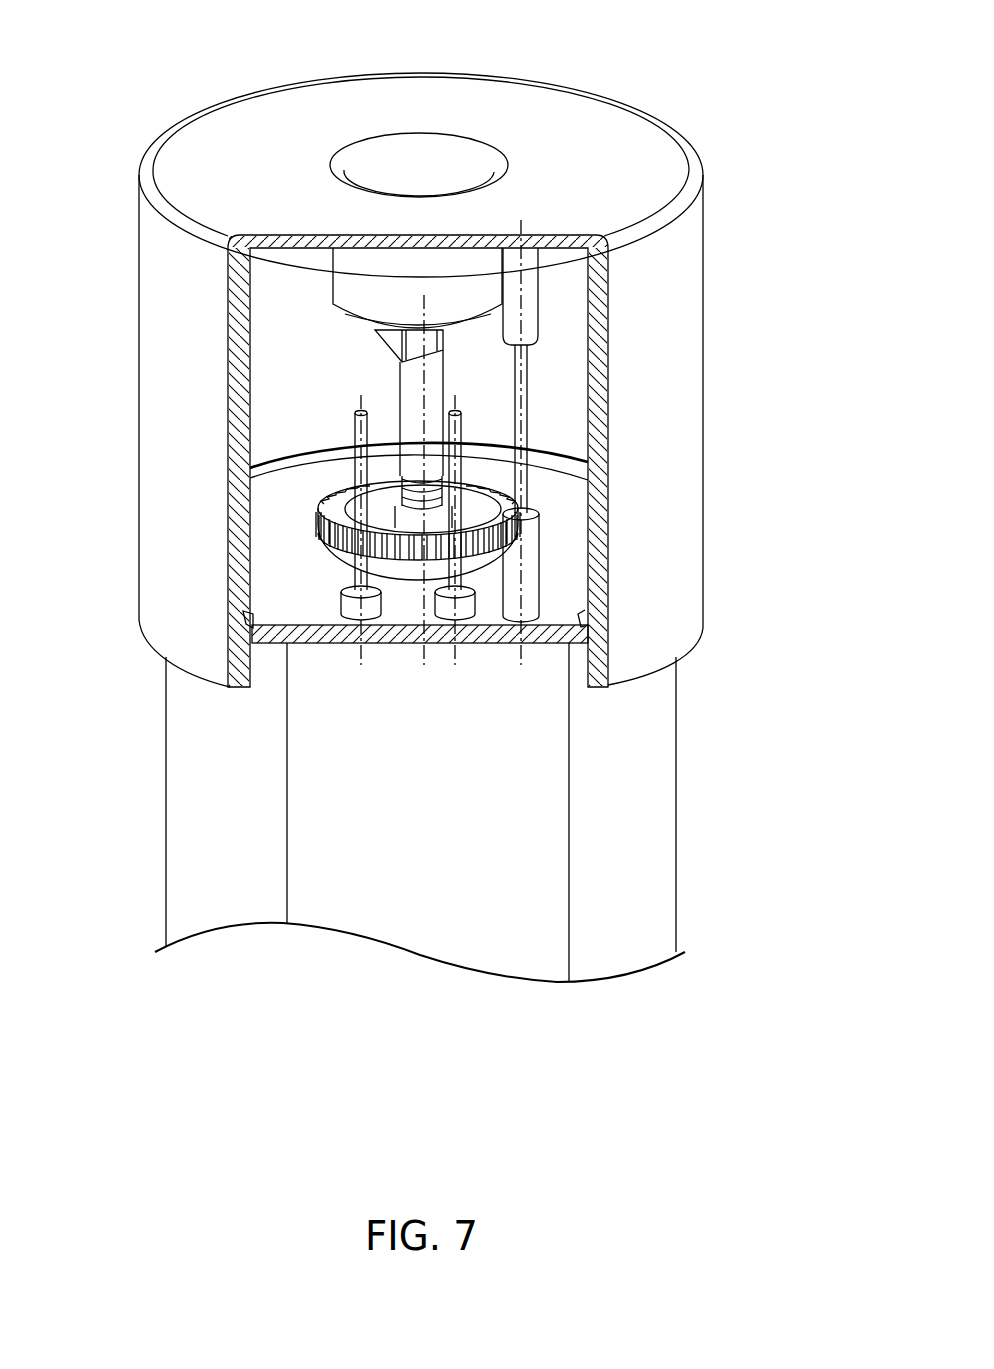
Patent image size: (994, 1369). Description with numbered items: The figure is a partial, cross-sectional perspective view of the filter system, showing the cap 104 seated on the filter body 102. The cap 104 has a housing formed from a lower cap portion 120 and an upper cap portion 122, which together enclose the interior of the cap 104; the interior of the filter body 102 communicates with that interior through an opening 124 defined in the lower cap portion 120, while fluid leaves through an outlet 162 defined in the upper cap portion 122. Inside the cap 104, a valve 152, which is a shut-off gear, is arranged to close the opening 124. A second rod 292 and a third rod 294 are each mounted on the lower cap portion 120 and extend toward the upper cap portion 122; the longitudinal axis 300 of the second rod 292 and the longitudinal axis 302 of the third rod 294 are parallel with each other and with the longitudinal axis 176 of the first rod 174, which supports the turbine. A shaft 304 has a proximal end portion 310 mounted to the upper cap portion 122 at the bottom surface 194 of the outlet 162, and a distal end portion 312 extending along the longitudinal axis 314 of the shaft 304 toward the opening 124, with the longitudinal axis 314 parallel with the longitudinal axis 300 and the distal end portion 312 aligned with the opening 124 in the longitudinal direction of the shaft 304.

The filter body 102 is at (650, 833).
The cap 104 is at (683, 367).
The lower cap portion 120 is at (285, 630).
The upper cap portion 122 is at (623, 127).
The opening 124 is at (412, 576).
The valve 152 is at (318, 505).
The outlet 162 is at (470, 273).
The first rod 174 is at (527, 264).
The longitudinal axis 176 is at (520, 293).
The bottom surface 194 is at (347, 329).
The second rod 292 is at (588, 482).
The third rod 294 is at (400, 428).
The longitudinal axis 300 is at (461, 421).
The longitudinal axis 302 is at (355, 427).
The shaft 304 is at (432, 377).
The proximal end portion 310 is at (400, 380).
The distal end portion 312 is at (527, 458).
The longitudinal axis 314 is at (427, 393).